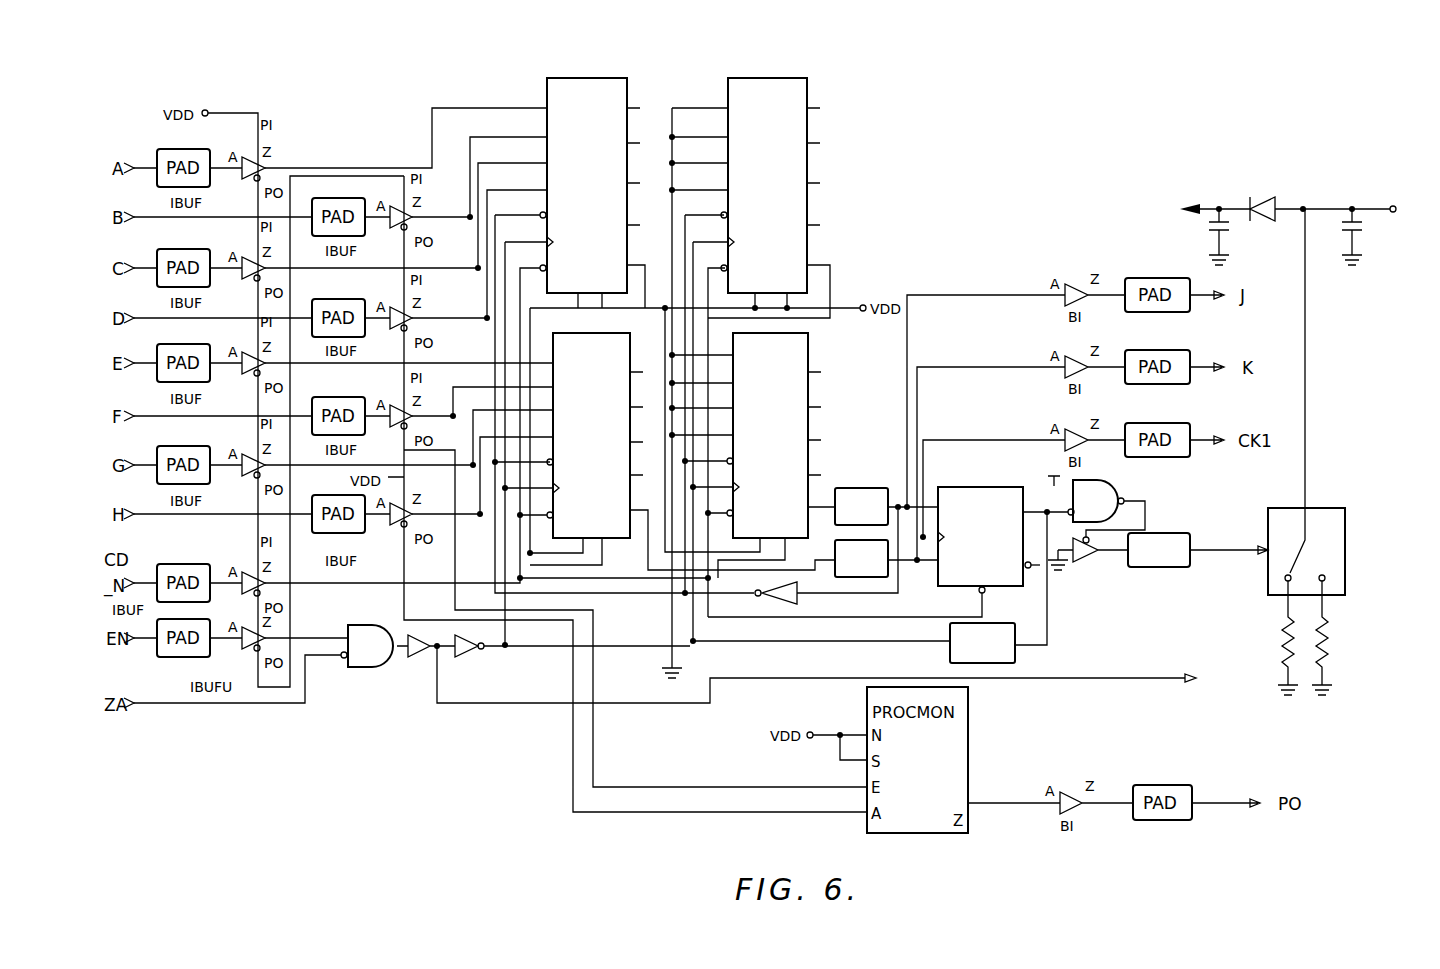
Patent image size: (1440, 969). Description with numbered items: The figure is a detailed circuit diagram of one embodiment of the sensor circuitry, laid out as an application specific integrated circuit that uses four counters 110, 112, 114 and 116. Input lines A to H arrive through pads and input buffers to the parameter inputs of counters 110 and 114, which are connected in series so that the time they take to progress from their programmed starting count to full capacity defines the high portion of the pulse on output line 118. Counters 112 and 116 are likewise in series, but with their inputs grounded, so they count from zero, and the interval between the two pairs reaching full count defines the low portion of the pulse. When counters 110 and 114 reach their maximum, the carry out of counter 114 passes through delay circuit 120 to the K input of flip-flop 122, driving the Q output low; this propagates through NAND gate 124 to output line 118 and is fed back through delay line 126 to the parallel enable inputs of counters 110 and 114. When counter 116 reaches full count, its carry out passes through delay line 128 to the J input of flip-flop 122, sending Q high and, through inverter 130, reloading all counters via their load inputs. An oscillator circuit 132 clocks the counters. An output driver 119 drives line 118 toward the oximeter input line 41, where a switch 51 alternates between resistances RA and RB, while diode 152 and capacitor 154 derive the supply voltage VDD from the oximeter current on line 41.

The counter 110 is at (628, 90).
The counter 112 is at (808, 90).
The counter 114 is at (640, 337).
The counter 116 is at (818, 337).
The output line 118 is at (1213, 552).
The output driver 119 is at (1082, 566).
The delay circuit 120 is at (870, 578).
The flip-flop 122 is at (975, 487).
The NAND gate 124 is at (1116, 492).
The delay line 126 is at (997, 630).
The delay line 128 is at (848, 486).
The inverter 130 is at (757, 598).
The oscillator circuit 132 is at (421, 707).
The diode 152 is at (1271, 195).
The capacitor 154 is at (1232, 236).
The input line 41 is at (1392, 215).
The switch 51 is at (1320, 508).